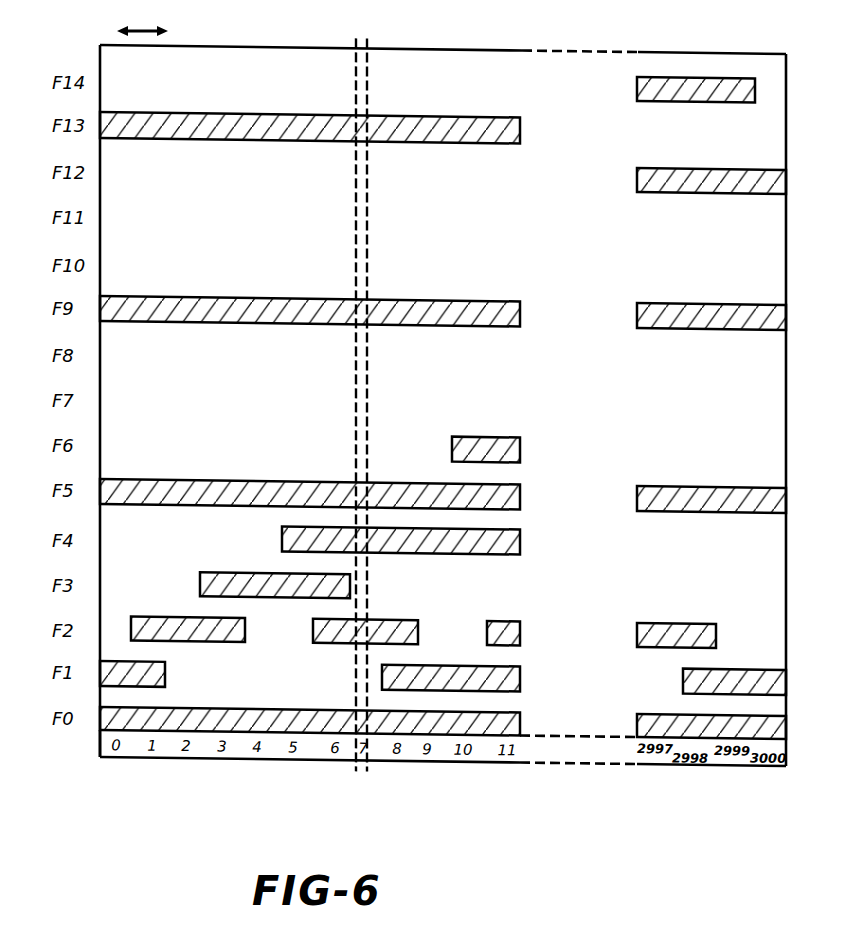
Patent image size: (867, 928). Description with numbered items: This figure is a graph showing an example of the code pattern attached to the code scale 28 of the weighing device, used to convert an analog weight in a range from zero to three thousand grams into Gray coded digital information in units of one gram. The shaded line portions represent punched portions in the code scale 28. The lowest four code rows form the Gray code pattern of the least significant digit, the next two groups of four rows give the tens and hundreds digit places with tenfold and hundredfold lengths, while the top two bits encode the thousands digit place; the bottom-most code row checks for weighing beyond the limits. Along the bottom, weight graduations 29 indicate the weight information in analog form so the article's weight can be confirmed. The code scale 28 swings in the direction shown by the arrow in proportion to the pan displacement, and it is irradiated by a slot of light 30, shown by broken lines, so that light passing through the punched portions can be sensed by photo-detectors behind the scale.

The code scale 28 is at (758, 55).
The weight graduations 29 is at (105, 745).
The slot of light 30 is at (371, 36).